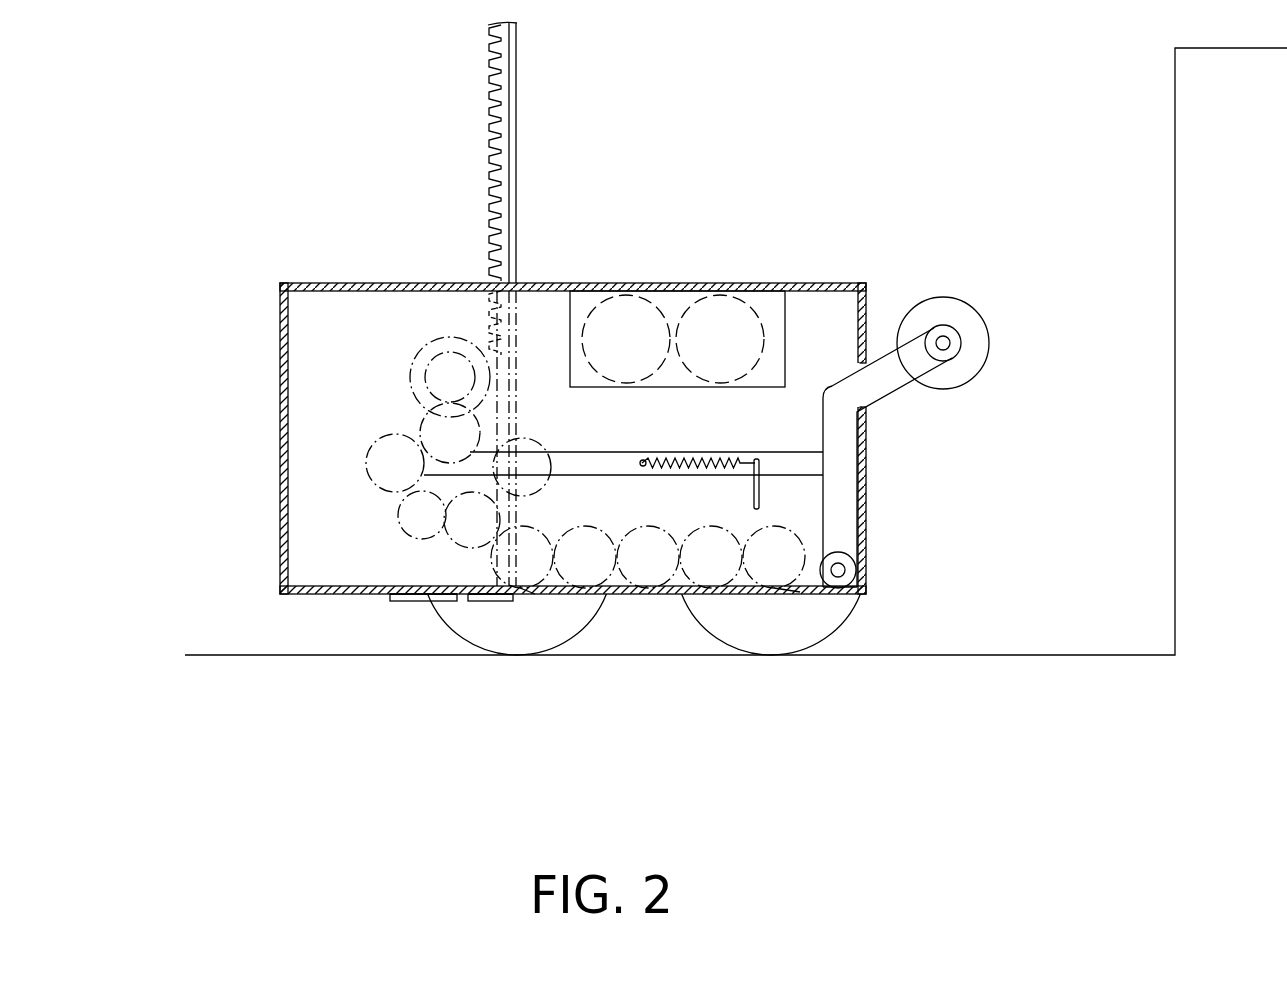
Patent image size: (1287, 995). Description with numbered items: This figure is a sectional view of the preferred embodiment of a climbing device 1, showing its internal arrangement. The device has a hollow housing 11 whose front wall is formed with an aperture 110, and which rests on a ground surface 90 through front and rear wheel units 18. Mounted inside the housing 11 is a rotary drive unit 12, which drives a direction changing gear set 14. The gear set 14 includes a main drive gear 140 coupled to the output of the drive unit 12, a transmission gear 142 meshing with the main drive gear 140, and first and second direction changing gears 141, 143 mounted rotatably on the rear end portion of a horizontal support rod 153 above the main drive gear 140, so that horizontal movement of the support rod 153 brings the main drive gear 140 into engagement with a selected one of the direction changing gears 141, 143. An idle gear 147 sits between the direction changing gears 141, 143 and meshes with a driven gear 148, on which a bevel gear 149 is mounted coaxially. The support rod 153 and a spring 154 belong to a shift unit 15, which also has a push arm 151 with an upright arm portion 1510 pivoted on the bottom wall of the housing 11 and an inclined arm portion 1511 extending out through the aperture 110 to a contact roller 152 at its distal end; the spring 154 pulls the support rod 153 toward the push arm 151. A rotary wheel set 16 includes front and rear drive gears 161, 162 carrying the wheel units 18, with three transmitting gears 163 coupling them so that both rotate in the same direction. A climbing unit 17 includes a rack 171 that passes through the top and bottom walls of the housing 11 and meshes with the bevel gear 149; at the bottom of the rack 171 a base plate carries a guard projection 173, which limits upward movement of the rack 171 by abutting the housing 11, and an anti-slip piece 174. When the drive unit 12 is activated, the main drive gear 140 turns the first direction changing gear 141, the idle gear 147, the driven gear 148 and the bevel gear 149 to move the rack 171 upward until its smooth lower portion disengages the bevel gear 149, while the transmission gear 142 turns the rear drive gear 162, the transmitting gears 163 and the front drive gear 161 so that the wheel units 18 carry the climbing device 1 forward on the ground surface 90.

The climbing device 1 is at (683, 208).
The hollow housing 11 is at (834, 285).
The aperture 110 is at (868, 364).
The rotary drive unit 12 is at (765, 301).
The direction changing gear set 14 is at (353, 477).
The main drive gear 140 is at (398, 523).
The first direction changing gear 141 is at (368, 441).
The transmission gear 142 is at (470, 549).
The second direction changing gear 143 is at (538, 440).
The idle gear 147 is at (430, 405).
The driven gear 148 is at (427, 365).
The bevel gear 149 is at (452, 335).
The shift unit 15 is at (948, 290).
The push arm 151 is at (893, 386).
The upright arm portion 1510 is at (850, 507).
The inclined arm portion 1511 is at (937, 360).
The contact roller 152 is at (990, 343).
The horizontal support rod 153 is at (781, 458).
The spring 154 is at (660, 460).
The rotary wheel set 16 is at (682, 637).
The front drive gear 161 is at (800, 592).
The rear drive gear 162 is at (533, 597).
The transmitting gears 163 is at (677, 592).
The climbing unit 17 is at (488, 304).
The rack 171 is at (488, 112).
The guard projection 173 is at (405, 602).
The anti-slip piece 174 is at (508, 588).
The front and rear wheel units 18 is at (545, 645).
The ground surface 90 is at (1090, 655).